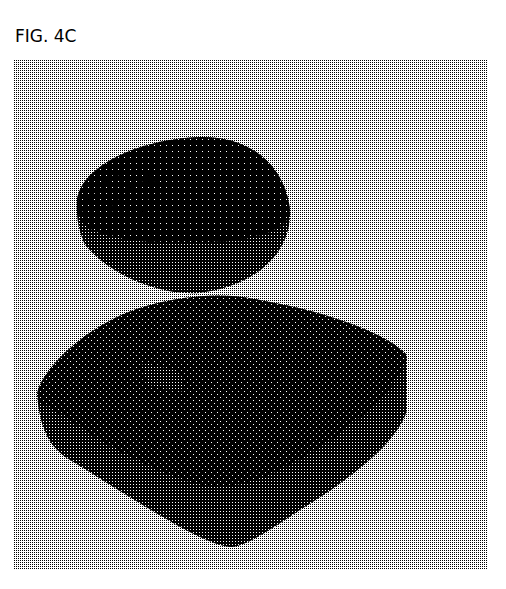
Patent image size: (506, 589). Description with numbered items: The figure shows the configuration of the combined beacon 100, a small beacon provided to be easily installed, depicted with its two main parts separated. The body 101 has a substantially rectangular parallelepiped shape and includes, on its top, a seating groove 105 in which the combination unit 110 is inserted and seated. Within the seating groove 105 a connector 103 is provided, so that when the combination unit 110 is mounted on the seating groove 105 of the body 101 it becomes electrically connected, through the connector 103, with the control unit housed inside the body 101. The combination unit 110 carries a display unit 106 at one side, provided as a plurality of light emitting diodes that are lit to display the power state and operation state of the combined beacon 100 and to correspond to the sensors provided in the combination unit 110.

The combined beacon 100 is at (254, 310).
The body 101 is at (250, 397).
The connector 103 is at (138, 355).
The seating groove 105 is at (280, 325).
The display unit 106 is at (110, 168).
The combination unit 110 is at (202, 183).